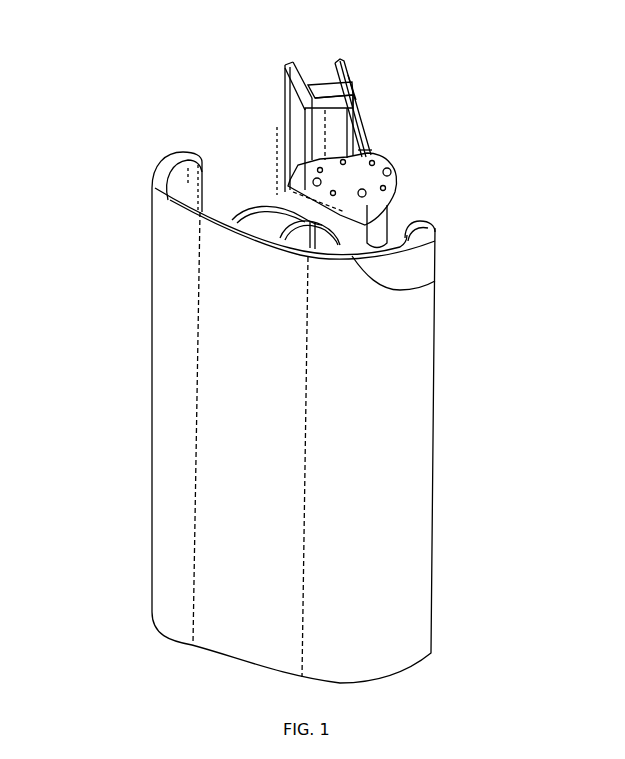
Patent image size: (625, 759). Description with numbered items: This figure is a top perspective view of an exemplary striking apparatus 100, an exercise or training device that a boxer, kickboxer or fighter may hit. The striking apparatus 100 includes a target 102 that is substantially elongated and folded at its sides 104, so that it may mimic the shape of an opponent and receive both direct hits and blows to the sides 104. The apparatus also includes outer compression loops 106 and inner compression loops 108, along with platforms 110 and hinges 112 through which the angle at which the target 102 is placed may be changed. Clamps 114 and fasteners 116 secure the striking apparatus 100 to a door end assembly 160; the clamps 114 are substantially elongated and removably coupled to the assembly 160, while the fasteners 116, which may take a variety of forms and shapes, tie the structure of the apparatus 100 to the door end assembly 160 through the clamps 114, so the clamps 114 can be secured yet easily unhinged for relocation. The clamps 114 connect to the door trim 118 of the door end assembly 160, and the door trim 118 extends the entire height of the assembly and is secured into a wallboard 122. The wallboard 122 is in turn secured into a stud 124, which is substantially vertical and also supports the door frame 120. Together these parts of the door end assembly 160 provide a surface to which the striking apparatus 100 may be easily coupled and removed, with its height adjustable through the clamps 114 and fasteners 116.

The striking apparatus 100 is at (63, 143).
The target 102 is at (166, 586).
The sides 104 is at (185, 154).
The outer compression loops 106 is at (425, 240).
The inner compression loops 108 is at (420, 288).
The platforms 110 is at (380, 173).
The hinges 112 is at (374, 187).
The clamps 114 is at (288, 160).
The fasteners 116 is at (290, 183).
The door trim 118 is at (283, 130).
The door frame 120 is at (383, 152).
The wallboard 122 is at (303, 88).
The stud 124 is at (363, 102).
The door end assembly 160 is at (307, 79).